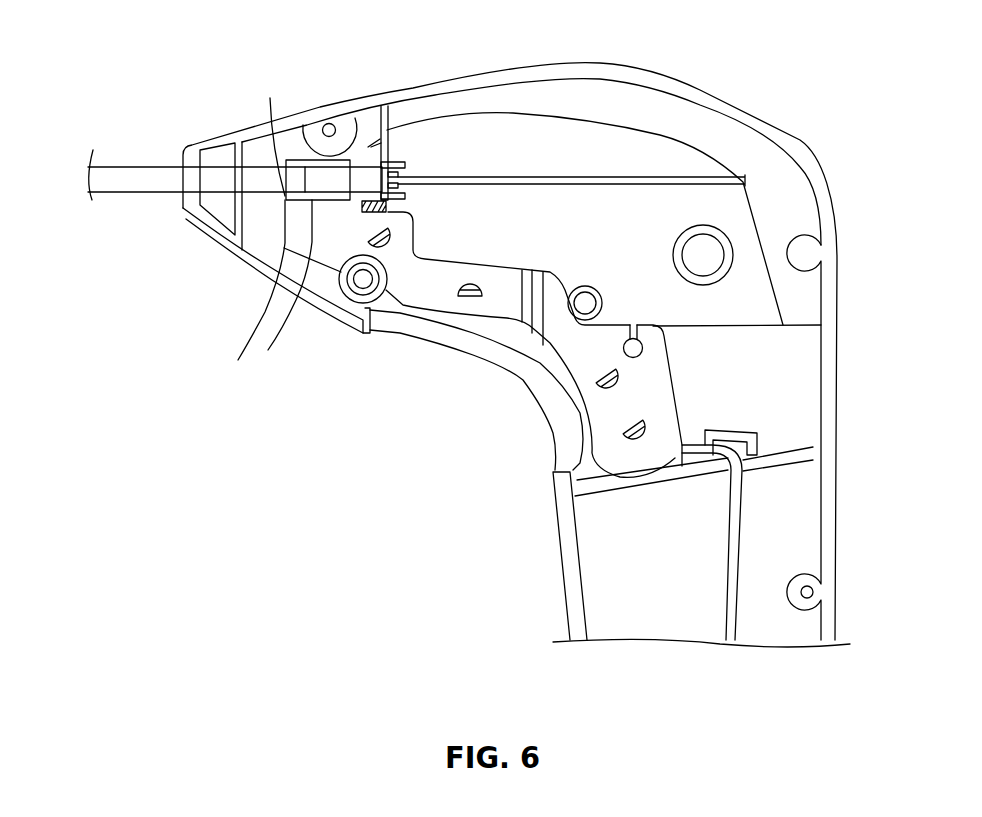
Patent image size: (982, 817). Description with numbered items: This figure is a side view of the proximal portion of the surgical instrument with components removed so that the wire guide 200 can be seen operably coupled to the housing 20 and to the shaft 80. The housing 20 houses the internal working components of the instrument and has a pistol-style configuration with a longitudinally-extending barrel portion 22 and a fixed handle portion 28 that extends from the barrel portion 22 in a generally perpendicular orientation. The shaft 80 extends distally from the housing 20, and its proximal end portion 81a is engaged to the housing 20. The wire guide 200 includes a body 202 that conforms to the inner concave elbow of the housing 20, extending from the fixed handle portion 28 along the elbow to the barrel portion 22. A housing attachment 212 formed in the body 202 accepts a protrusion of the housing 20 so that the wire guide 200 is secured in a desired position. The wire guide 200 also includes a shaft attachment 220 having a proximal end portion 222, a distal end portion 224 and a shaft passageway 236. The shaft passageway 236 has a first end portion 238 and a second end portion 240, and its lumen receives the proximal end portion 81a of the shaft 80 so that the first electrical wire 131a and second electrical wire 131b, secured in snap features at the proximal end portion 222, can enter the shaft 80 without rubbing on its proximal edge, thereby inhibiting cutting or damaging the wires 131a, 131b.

The housing 20 is at (812, 90).
The barrel portion 22 is at (636, 64).
The fixed handle portion 28 is at (843, 555).
The shaft 80 is at (150, 165).
The proximal end portion of shaft 81a is at (385, 152).
The wire guide 200 is at (474, 324).
The body 202 is at (684, 380).
The housing attachment 212 is at (637, 322).
The shaft attachment 220 is at (333, 152).
The proximal end portion of shaft attachment 222 is at (240, 363).
The distal end portion of shaft attachment 224 is at (286, 158).
The shaft passageway 236 is at (390, 118).
The first end portion of shaft passageway 238 is at (363, 207).
The second end portion of shaft passageway 240 is at (267, 285).
The first electrical wire 131a is at (744, 513).
The second electrical wire 131b is at (716, 562).